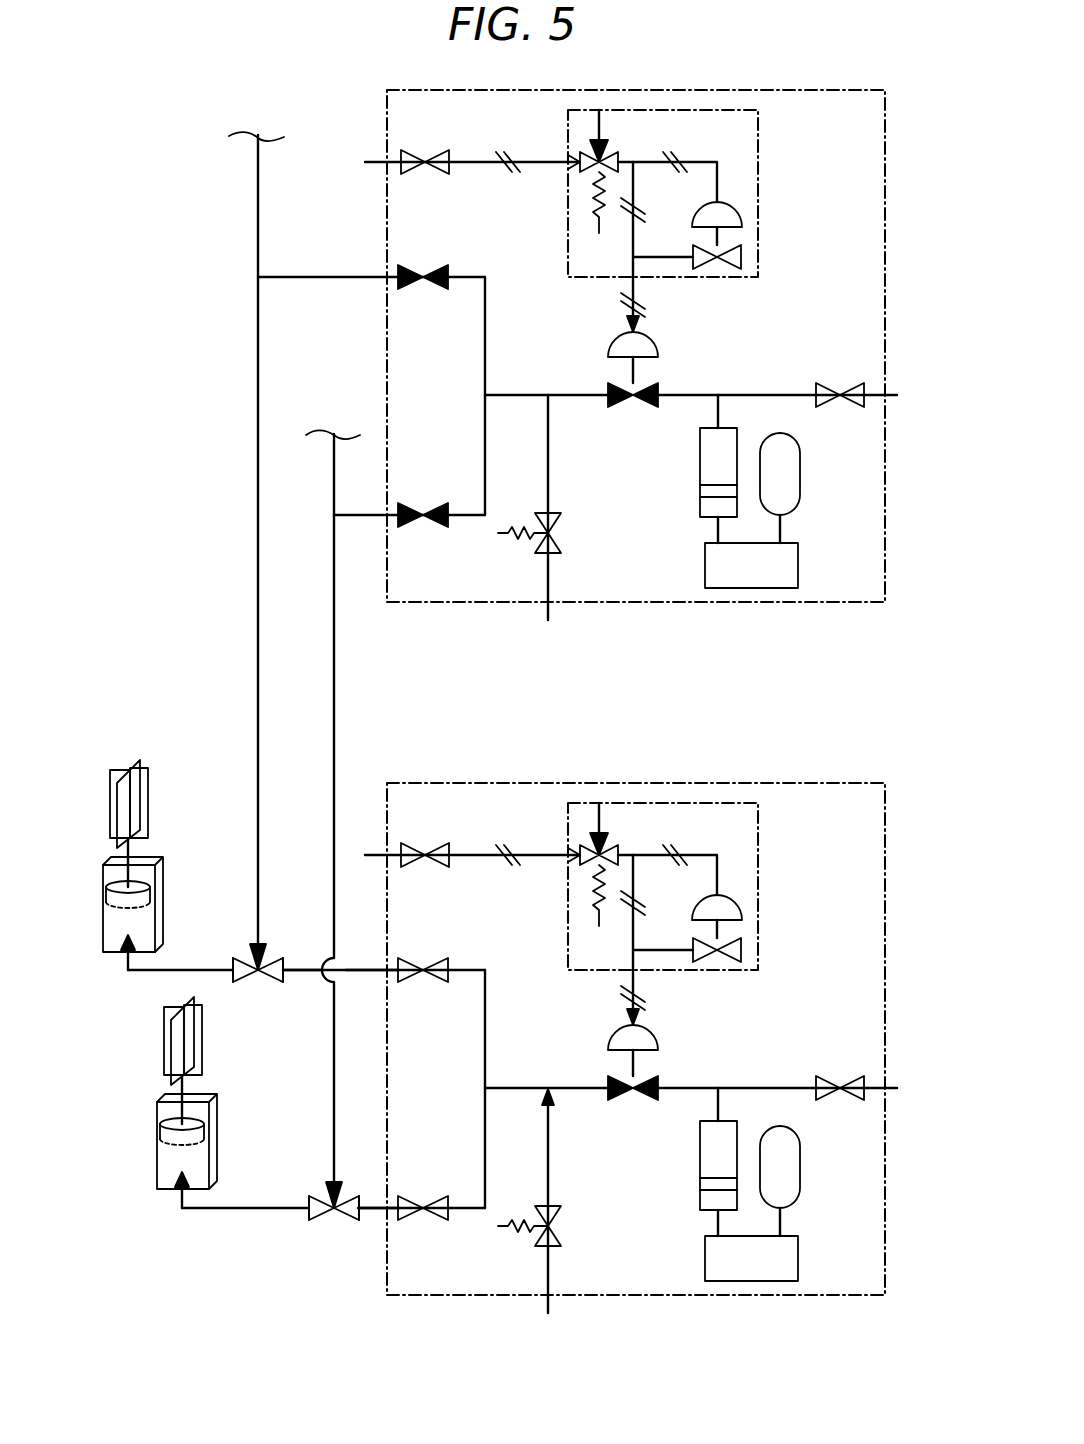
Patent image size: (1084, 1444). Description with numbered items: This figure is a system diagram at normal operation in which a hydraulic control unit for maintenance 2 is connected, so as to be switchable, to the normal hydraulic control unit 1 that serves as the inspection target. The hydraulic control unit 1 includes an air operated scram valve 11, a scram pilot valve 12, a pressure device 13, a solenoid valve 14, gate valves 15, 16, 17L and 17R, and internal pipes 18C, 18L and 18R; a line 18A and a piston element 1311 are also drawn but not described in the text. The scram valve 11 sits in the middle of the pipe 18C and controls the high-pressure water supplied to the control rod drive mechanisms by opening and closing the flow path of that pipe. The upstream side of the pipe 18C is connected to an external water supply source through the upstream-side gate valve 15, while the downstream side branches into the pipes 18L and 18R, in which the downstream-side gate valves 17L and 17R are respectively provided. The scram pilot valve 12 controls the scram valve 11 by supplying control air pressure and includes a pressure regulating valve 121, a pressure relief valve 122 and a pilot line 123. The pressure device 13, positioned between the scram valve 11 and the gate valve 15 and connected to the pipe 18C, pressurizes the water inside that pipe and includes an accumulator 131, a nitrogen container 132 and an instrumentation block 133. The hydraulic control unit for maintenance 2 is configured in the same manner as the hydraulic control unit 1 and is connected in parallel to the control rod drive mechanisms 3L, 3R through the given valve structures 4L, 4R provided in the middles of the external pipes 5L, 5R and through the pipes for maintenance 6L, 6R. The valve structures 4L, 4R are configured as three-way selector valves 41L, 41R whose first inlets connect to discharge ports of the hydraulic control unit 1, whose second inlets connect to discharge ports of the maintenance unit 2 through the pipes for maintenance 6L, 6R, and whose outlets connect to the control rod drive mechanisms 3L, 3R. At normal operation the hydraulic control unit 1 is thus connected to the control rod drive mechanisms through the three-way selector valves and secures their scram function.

The hydraulic control unit 1 is at (792, 782).
The hydraulic control unit for maintenance 2 is at (466, 604).
The control rod drive mechanism 3R is at (112, 953).
The control rod drive mechanism 3L is at (163, 1189).
The valve structure 4R is at (266, 956).
The valve structure 4L is at (322, 1196).
The three-way selector valve 41R is at (258, 984).
The three-way selector valve 41L is at (340, 1220).
The external pipe 5R is at (180, 970).
The external pipe 5L is at (220, 1208).
The pipe for maintenance 6R is at (258, 470).
The pipe for maintenance 6L is at (334, 695).
The scram valve 11 is at (608, 345).
The scram pilot valve 12 is at (762, 143).
The pressure regulating valve 121 is at (748, 212).
The pressure relief valve 122 is at (593, 146).
The pilot line 123 is at (706, 162).
The pressure device 13 is at (798, 440).
The accumulator 131 is at (700, 461).
The piston 1311 is at (700, 491).
The nitrogen container 132 is at (792, 478).
The instrumentation block 133 is at (792, 558).
The solenoid valve 14 is at (560, 540).
The gate valve 15 is at (830, 382).
The gate valve 16 is at (440, 150).
The gate valve 17R is at (410, 266).
The gate valve 17L is at (436, 502).
The supply passage 18A is at (480, 168).
The internal pipe 18R is at (485, 305).
The internal pipe 18L is at (485, 415).
The internal pipe 18C is at (748, 395).